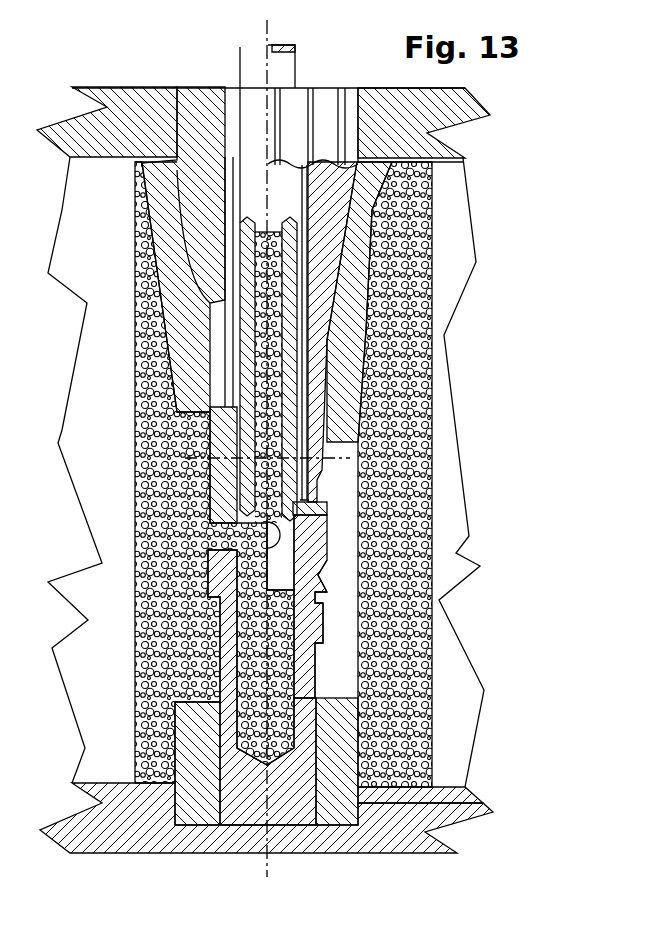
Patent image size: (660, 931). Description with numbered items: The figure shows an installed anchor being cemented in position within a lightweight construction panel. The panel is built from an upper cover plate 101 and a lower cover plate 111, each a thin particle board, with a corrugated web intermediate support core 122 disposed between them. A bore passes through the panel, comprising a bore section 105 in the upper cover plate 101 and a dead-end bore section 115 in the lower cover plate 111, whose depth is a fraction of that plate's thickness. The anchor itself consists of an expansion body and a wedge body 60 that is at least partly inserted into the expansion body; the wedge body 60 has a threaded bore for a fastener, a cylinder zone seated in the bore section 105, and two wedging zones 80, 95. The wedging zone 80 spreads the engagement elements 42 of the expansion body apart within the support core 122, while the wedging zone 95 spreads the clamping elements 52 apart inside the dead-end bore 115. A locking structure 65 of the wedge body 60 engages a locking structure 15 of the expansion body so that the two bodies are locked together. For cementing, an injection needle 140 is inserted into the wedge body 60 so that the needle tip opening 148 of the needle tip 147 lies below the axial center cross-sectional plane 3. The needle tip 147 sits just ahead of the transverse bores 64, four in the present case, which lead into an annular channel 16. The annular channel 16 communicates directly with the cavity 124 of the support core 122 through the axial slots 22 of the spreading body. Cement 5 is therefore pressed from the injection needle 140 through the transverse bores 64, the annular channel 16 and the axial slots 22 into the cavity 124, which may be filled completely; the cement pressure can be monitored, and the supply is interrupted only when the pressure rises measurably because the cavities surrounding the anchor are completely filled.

The cover plate 101 is at (433, 110).
The bore section 105 is at (358, 142).
The engagement elements 42 is at (368, 203).
The wedge body 60 is at (330, 228).
The wedging zone 80 is at (338, 250).
The cavity 124 is at (422, 293).
The injection needle 140 is at (287, 317).
The corrugated web intermediate support core 122 is at (441, 373).
The axial slots 22 is at (347, 430).
The axial center cross-sectional plane 3 is at (342, 458).
The needle tip 147 is at (288, 502).
The needle tip opening 148 is at (322, 503).
The transverse bore 64 is at (305, 532).
The annular channel 16 is at (318, 545).
The cement 5 is at (326, 578).
The locking structure 15 is at (318, 594).
The locking structure 65 is at (322, 604).
The clamping elements 52 is at (337, 727).
The wedging zone 95 is at (313, 767).
The bore section 115 is at (483, 803).
The cover plate 111 is at (410, 822).